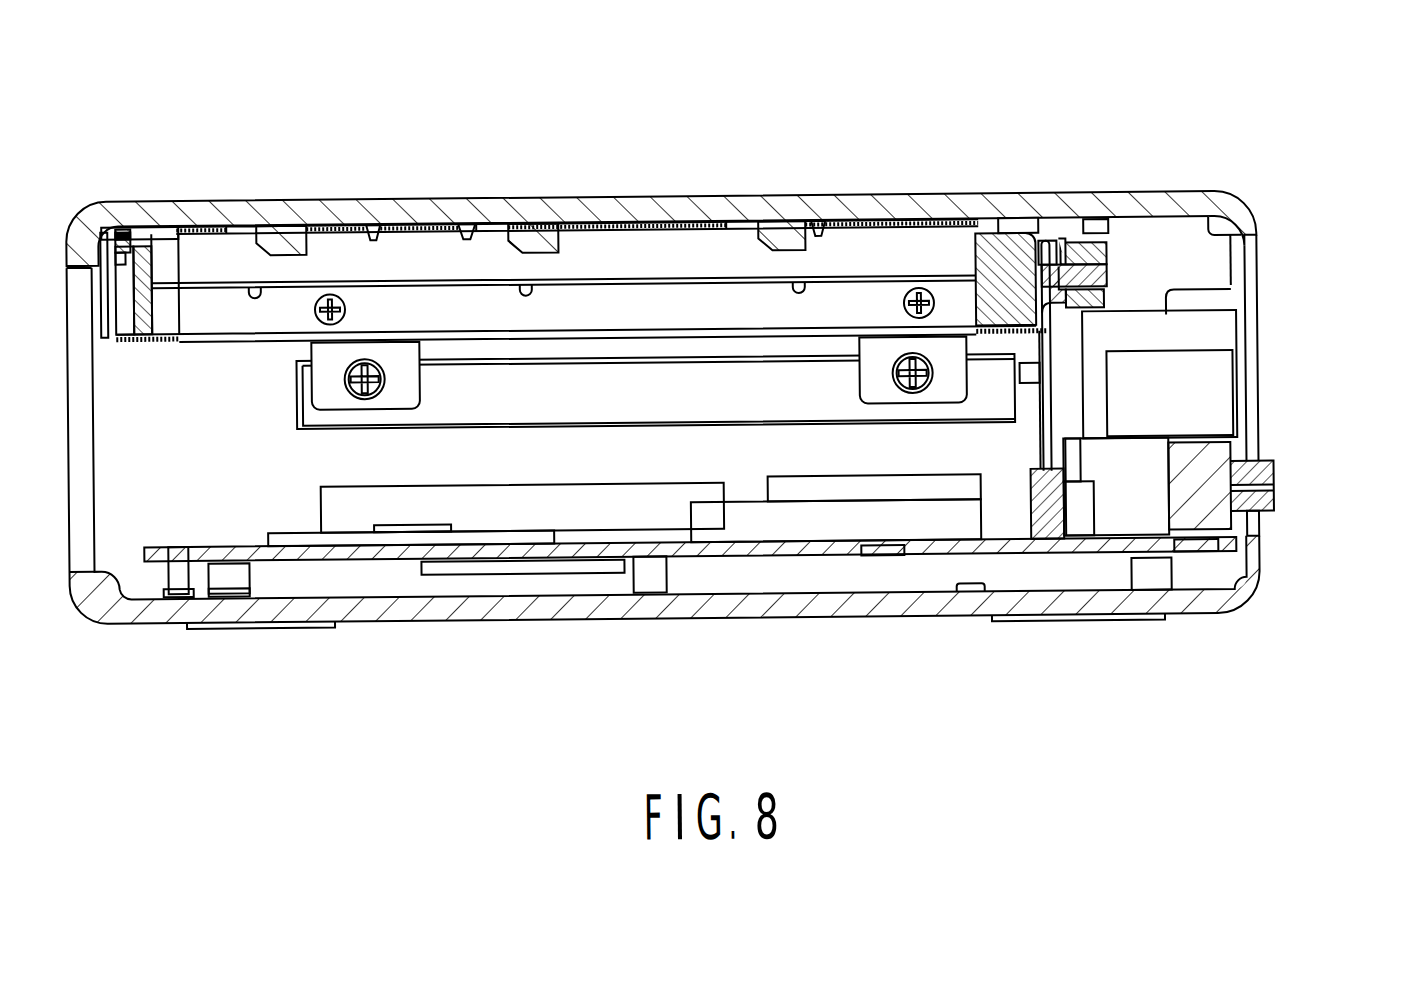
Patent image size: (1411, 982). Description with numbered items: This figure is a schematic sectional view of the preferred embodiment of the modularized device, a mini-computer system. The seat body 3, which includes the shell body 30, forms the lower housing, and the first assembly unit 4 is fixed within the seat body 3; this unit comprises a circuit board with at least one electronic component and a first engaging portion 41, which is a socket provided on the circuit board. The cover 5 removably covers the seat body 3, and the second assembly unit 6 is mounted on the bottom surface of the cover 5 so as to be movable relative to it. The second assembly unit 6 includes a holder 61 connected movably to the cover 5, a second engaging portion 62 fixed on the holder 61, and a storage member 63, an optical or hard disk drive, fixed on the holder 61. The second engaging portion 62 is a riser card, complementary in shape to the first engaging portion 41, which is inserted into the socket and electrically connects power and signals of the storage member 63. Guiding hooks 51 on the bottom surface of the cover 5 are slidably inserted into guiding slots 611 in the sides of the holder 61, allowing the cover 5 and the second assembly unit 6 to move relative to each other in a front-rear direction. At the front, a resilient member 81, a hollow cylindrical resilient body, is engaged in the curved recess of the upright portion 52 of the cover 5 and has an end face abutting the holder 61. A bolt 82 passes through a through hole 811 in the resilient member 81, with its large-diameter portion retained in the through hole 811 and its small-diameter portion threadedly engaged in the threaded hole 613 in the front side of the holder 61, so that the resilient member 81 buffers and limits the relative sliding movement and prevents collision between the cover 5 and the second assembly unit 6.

The cover 5 is at (1260, 199).
The seat body 3 is at (545, 626).
The shell body 30 is at (405, 624).
The first assembly unit 4 is at (782, 556).
The first engaging portion 41 is at (1047, 470).
The second assembly unit 6 is at (286, 418).
The holder 61 is at (413, 222).
The guiding slots 611 is at (237, 222).
The guiding hooks 51 is at (297, 221).
The second engaging portion 62 is at (1045, 466).
The storage member 63 is at (717, 397).
The threaded hole 613 is at (1048, 256).
The resilient member 81 is at (1073, 255).
The bolt 82 is at (1108, 284).
The upright portion 52 is at (1093, 238).
The through hole 811 is at (1108, 288).